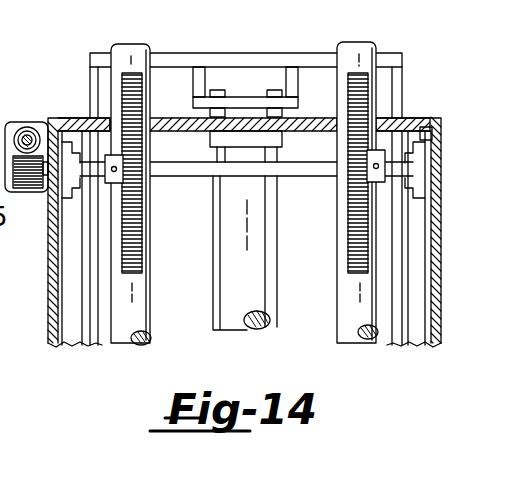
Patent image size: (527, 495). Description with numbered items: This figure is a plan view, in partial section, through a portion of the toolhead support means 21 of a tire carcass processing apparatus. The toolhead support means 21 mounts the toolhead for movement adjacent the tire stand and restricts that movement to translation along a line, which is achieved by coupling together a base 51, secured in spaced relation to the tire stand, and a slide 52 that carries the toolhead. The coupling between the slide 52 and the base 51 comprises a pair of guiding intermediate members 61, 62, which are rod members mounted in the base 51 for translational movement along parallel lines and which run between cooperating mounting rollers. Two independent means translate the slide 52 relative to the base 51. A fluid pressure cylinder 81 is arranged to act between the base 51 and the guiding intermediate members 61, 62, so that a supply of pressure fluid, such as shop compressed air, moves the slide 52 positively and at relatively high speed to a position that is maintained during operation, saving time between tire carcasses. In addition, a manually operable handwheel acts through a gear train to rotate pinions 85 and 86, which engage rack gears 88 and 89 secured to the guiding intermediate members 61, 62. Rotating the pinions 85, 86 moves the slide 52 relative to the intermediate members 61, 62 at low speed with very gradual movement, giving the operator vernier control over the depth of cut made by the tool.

The toolhead support means 21 is at (87, 352).
The base 51 is at (88, 72).
The slide 52 is at (72, 118).
The guiding intermediate member 61 is at (140, 340).
The guiding intermediate member 62 is at (356, 330).
The fluid pressure cylinder 81 is at (232, 293).
The pinion 85 is at (141, 197).
The pinion 86 is at (347, 180).
The rack gear 88 is at (141, 238).
The rack gear 89 is at (349, 228).